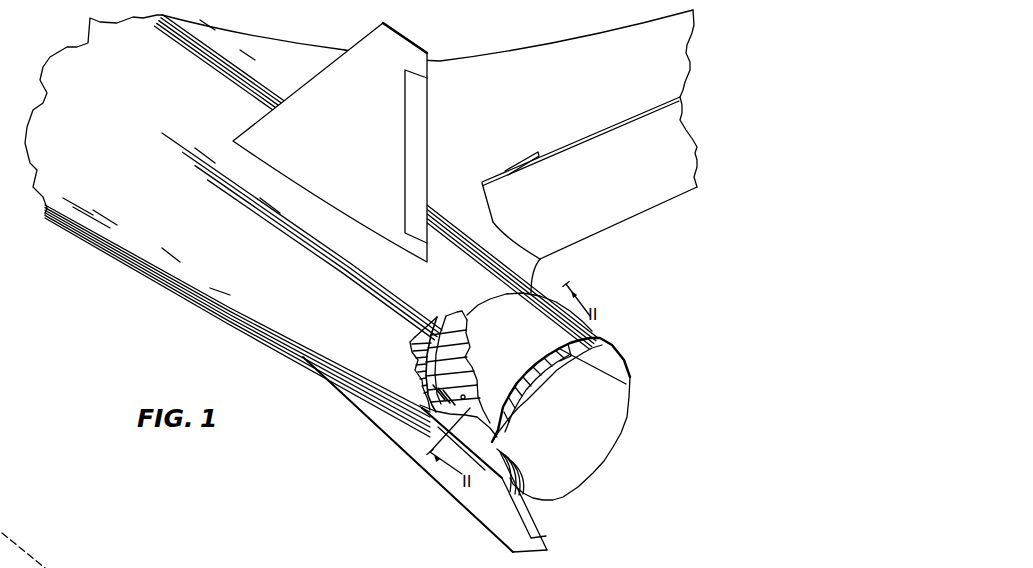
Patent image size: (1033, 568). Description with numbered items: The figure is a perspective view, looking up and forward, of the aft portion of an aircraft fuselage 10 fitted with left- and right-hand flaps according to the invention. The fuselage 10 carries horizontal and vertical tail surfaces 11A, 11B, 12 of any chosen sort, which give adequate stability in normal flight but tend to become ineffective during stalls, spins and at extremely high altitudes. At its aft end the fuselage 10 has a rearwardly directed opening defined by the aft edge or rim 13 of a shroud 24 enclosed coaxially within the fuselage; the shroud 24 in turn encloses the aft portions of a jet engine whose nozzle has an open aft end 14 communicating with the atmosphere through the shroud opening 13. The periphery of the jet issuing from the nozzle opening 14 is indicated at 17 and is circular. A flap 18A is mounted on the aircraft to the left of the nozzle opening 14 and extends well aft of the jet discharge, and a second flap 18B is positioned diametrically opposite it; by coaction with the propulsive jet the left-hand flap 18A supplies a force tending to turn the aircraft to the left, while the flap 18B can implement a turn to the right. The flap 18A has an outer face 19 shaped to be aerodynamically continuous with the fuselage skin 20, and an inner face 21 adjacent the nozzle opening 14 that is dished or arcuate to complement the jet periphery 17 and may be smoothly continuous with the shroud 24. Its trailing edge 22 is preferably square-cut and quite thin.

The aircraft fuselage 10 is at (148, 285).
The tail surface 11A is at (406, 37).
The tail surface 11B is at (438, 487).
The tail surface 12 is at (640, 27).
The aft edge or rim of the shroud 13 is at (530, 410).
The nozzle open aft end 14 is at (538, 380).
The periphery of the jet 17 is at (72, 567).
The flap 18A is at (596, 329).
The second flap 18B is at (591, 476).
The outer face of the flap 19 is at (521, 343).
The fuselage skin 20 is at (228, 241).
The inner face of the flap 21 is at (607, 360).
The flap trailing edge 22 is at (508, 407).
The shroud 24 is at (440, 336).